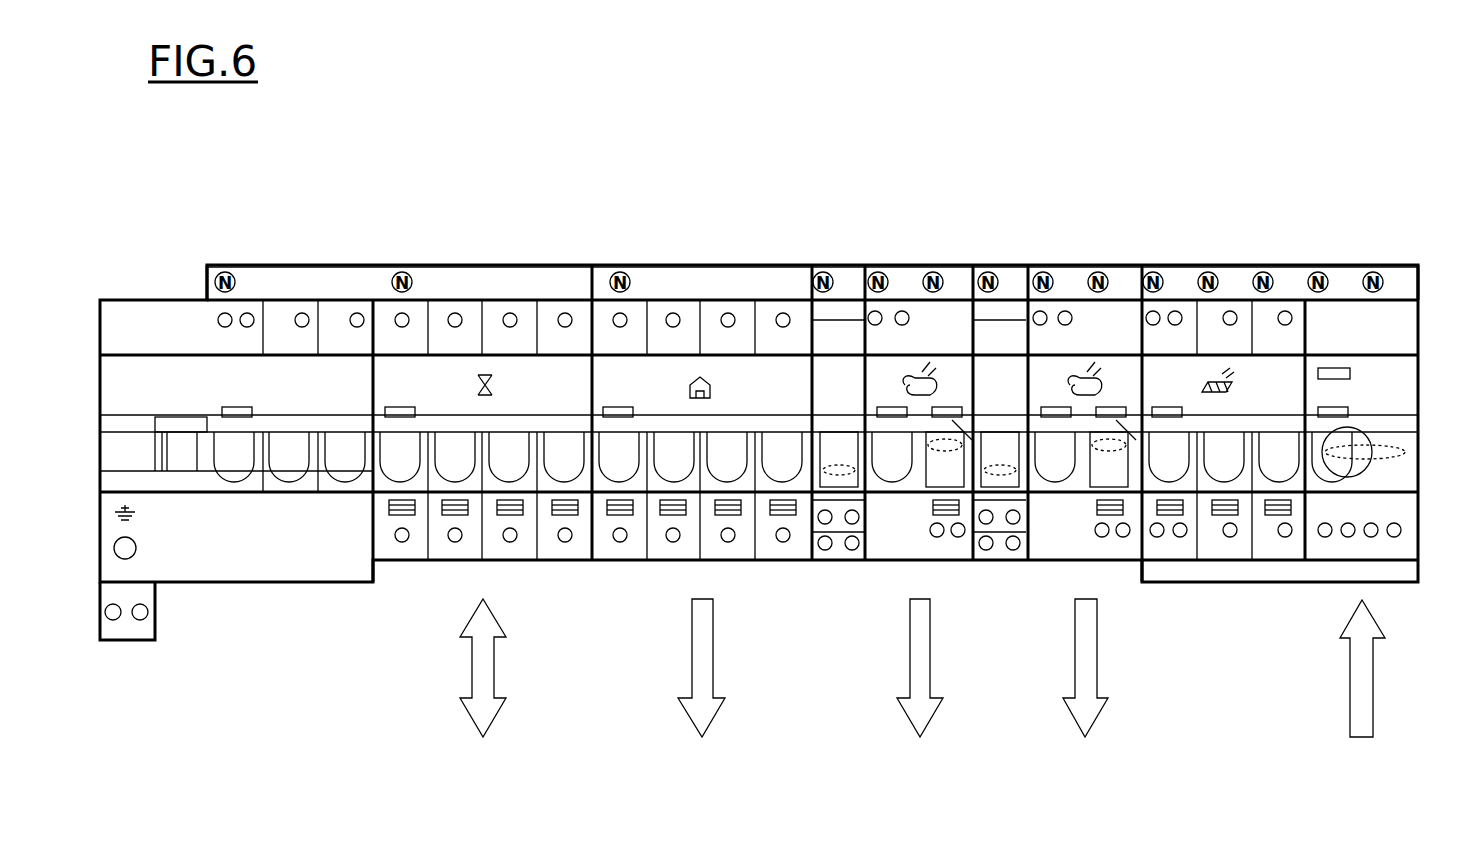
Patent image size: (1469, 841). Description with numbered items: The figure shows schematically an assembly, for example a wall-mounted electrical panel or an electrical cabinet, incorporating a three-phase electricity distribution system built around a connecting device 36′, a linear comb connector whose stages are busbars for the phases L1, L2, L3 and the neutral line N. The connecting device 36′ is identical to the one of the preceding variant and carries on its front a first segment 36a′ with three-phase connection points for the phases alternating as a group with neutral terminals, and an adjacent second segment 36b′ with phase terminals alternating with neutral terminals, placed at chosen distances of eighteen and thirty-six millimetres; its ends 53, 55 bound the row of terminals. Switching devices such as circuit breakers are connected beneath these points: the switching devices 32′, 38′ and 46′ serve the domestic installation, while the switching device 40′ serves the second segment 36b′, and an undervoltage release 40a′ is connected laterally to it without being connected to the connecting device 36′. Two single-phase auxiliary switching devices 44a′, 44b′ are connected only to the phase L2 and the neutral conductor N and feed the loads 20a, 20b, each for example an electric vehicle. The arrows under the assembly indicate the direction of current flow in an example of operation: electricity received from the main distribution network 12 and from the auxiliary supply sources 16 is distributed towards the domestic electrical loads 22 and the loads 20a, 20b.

The first end of busbar 53 is at (185, 280).
The second end of busbar 55 is at (1438, 254).
The connecting device 36′ is at (712, 264).
The first segment 36a′ is at (479, 215).
The second segment 36b′ is at (1010, 215).
The switching device 32′ is at (228, 572).
The switching device 38′ is at (403, 548).
The switching device 46′ is at (620, 548).
The auxiliary switching device 44a′ is at (878, 548).
The auxiliary switching device 44b′ is at (1040, 548).
The switching device 40′ is at (1212, 545).
The undervoltage release 40a′ is at (1388, 545).
The distribution network 12 is at (494, 667).
The domestic electrical loads 22 is at (713, 648).
The load 20a is at (930, 650).
The load 20b is at (1097, 650).
The auxiliary supply sources 16 is at (1373, 686).